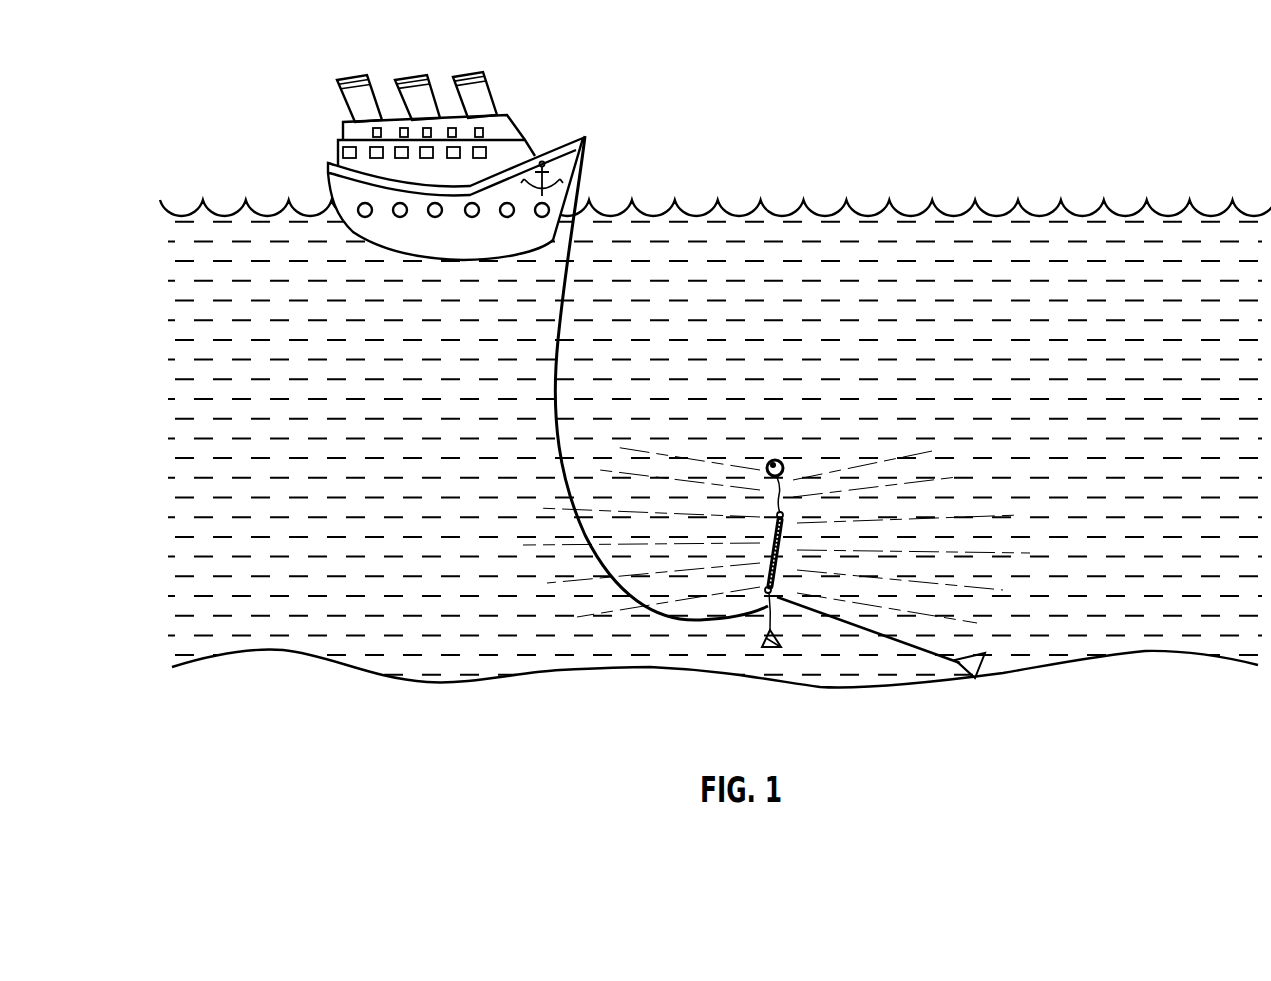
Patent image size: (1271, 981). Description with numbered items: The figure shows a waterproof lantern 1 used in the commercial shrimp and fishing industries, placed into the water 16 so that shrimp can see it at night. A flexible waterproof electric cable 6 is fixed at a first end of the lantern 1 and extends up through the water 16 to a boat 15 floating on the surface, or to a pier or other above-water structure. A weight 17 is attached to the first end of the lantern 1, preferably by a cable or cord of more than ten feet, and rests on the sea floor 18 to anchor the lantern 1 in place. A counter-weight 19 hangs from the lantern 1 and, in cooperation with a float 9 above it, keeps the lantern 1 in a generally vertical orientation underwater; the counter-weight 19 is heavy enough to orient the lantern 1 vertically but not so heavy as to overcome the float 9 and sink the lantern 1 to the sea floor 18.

The waterproof lantern 1 is at (735, 560).
The flexible waterproof electric cable 6 is at (553, 345).
The float 9 is at (780, 458).
The boat 15 is at (310, 72).
The water 16 is at (812, 235).
The weight 17 is at (958, 670).
The sea floor 18 is at (1028, 670).
The counter-weight 19 is at (765, 638).